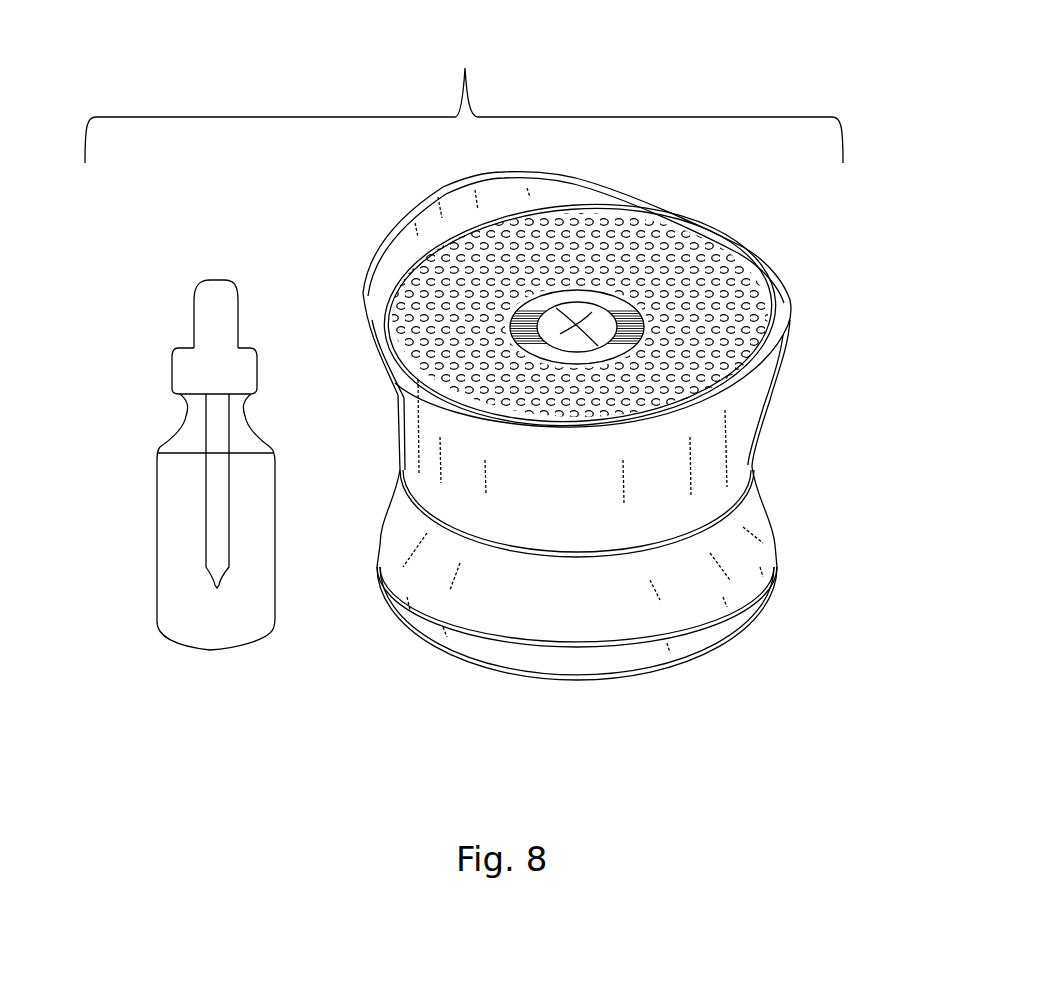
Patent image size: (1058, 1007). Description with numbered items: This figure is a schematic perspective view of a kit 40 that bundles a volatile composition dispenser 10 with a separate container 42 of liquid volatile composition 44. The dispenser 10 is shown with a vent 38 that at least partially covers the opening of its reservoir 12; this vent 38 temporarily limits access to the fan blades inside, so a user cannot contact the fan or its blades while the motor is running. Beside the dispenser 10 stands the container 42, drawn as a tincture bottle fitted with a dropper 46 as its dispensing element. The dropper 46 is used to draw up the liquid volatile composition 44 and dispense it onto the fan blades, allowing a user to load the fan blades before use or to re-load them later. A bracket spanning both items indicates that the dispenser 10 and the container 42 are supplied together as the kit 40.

The volatile composition dispenser 10 is at (649, 482).
The reservoir 12 is at (693, 467).
The vent 38 is at (727, 308).
The kit 40 is at (464, 96).
The container 42 is at (188, 486).
The liquid volatile composition 44 is at (243, 595).
The dropper 46 is at (192, 504).